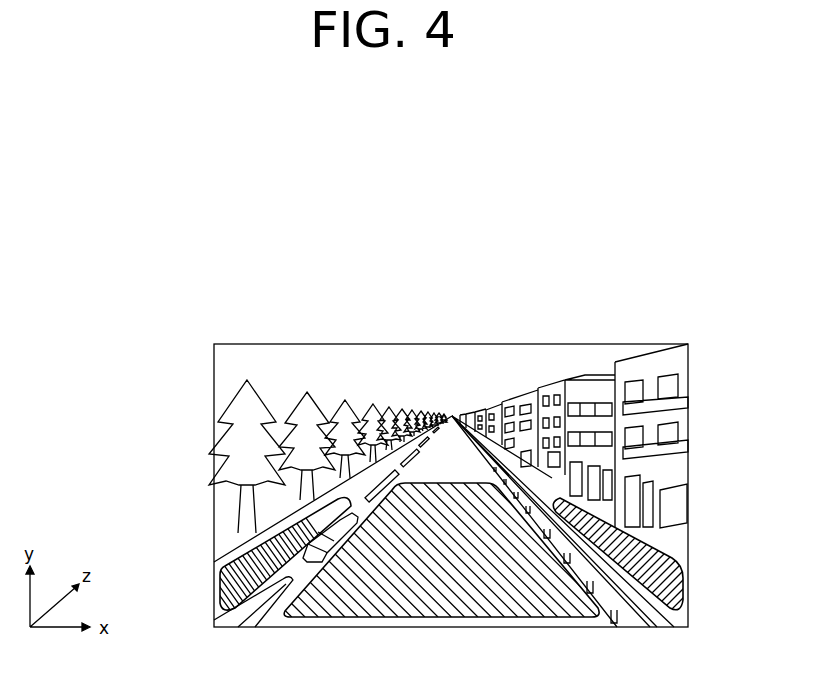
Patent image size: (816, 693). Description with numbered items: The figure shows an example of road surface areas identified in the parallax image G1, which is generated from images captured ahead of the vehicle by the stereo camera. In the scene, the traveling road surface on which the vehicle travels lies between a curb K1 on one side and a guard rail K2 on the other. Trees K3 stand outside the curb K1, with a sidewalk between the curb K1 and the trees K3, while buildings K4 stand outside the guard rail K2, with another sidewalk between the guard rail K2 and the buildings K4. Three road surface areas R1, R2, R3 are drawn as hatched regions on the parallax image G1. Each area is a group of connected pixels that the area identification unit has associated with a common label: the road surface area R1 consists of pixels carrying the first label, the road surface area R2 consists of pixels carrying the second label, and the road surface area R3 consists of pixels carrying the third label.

The parallax image G1 is at (584, 343).
The curb K1 is at (234, 626).
The guard rail K2 is at (647, 627).
The trees K3 is at (214, 437).
The buildings K4 is at (682, 352).
The road surface area R1 is at (452, 628).
The road surface area R2 is at (220, 591).
The road surface area R3 is at (684, 589).